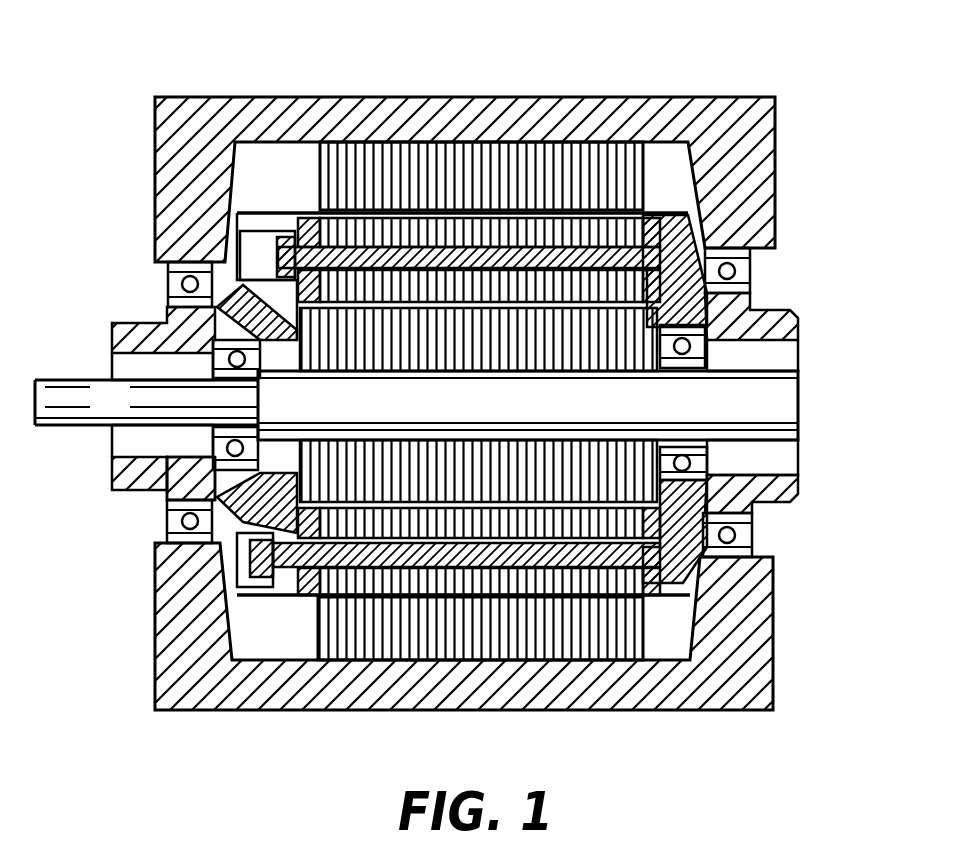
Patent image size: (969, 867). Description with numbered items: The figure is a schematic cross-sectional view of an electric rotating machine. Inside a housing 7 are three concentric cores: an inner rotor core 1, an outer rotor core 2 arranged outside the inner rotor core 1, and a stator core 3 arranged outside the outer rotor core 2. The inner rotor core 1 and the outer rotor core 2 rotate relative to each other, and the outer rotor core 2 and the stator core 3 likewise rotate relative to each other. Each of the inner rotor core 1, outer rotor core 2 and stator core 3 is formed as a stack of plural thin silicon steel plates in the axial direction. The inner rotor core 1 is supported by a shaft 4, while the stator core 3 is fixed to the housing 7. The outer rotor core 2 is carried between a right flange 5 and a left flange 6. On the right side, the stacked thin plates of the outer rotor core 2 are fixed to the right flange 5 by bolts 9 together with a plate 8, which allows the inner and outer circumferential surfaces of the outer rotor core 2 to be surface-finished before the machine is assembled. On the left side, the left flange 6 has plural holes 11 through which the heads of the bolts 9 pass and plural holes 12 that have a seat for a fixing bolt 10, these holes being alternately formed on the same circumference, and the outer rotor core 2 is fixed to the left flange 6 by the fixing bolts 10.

The inner rotor core 1 is at (470, 330).
The outer rotor core 2 is at (605, 225).
The stator core 3 is at (525, 150).
The shaft 4 is at (778, 400).
The right flange 5 is at (790, 484).
The left flange 6 is at (112, 340).
The housing 7 is at (765, 617).
The plate 8 is at (315, 213).
The bolt 9 is at (268, 262).
The fixing bolt 10 is at (257, 572).
The hole 11 is at (228, 248).
The hole 12 is at (240, 547).